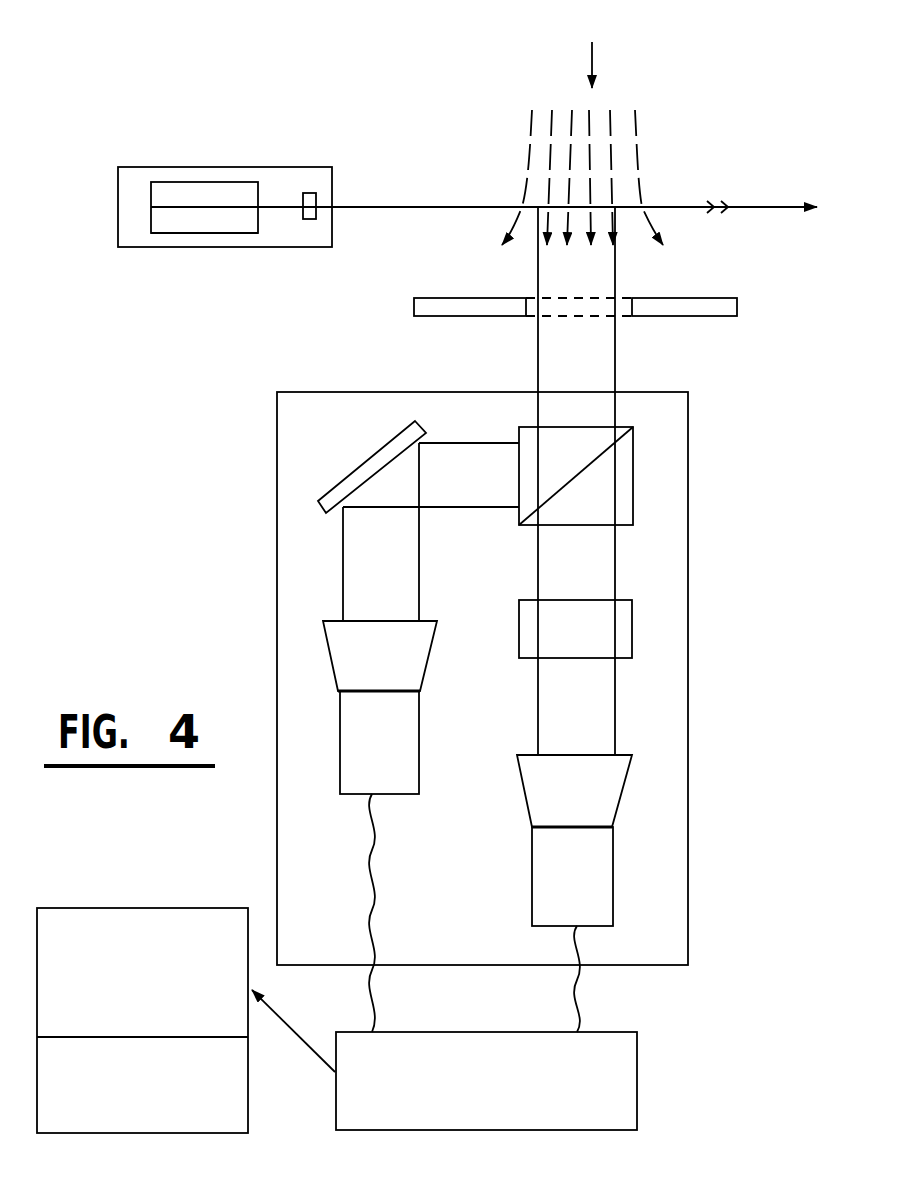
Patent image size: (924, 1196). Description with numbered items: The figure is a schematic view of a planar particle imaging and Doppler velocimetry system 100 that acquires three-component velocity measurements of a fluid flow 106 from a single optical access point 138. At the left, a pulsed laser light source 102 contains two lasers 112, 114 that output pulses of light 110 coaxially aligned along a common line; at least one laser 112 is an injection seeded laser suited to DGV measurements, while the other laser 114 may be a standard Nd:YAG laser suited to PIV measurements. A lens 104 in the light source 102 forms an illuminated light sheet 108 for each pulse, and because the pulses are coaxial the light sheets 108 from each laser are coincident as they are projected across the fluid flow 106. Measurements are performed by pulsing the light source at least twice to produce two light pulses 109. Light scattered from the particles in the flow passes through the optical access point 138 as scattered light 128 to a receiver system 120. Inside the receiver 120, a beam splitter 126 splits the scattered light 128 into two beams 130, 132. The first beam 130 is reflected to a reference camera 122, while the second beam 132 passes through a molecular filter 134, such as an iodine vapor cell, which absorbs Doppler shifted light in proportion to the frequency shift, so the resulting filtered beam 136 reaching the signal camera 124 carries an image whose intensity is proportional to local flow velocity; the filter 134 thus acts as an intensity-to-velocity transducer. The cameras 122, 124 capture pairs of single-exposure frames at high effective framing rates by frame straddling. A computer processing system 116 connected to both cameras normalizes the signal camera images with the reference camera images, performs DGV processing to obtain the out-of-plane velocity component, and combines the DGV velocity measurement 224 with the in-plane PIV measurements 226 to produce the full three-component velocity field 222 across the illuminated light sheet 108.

The planar particle imaging and Doppler velocimetry system 100 is at (675, 158).
The pulsed laser light source 102 is at (288, 167).
The lens 104 is at (308, 220).
The fluid flow 106 is at (591, 48).
The illuminated light sheet 108 is at (412, 207).
The light pulses 109 is at (727, 193).
The pulses of light 110 is at (282, 207).
The laser 112 is at (188, 233).
The laser 114 is at (202, 182).
The computer processing system 116 is at (638, 1063).
The receiver system 120 is at (692, 448).
The reference camera 122 is at (397, 794).
The signal camera 124 is at (612, 856).
The beam splitter 126 is at (633, 490).
The scattered light 128 is at (618, 343).
The first beam 130 is at (485, 442).
The second beam 132 is at (616, 573).
The molecular filter 134 is at (631, 627).
The filtered beam 136 is at (616, 694).
The single optical access point 138 is at (630, 286).
The 3-component velocity field 222 is at (120, 888).
The DGV velocity measurement 224 is at (247, 1077).
The in-plane PIV measurements 226 is at (245, 1112).